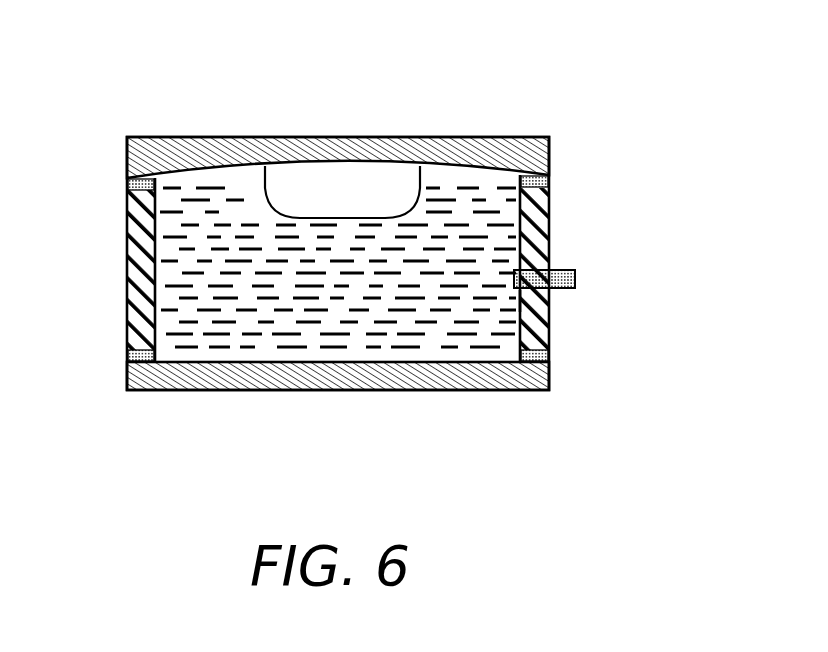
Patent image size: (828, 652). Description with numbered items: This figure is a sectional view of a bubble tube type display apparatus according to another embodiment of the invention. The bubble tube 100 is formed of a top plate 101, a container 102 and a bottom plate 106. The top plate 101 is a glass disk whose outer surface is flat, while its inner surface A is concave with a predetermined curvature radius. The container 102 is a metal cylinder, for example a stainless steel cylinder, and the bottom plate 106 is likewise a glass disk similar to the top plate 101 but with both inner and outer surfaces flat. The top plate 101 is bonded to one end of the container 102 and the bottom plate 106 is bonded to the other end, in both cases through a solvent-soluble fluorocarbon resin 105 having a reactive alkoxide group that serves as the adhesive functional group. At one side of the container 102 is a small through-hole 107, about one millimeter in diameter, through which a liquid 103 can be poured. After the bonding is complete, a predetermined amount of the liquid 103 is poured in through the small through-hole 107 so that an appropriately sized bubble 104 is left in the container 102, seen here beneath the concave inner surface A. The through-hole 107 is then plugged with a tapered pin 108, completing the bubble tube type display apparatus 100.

The bubble tube 100 is at (462, 121).
The top plate 101 is at (549, 152).
The container 102 is at (549, 320).
The liquid 103 is at (383, 322).
The bubble 104 is at (360, 190).
The solvent-soluble fluorocarbon resin 105 is at (549, 187).
The bottom plate 106 is at (521, 394).
The small through-hole 107 is at (549, 300).
The tapered pin 108 is at (549, 255).
The inner surface A is at (212, 178).